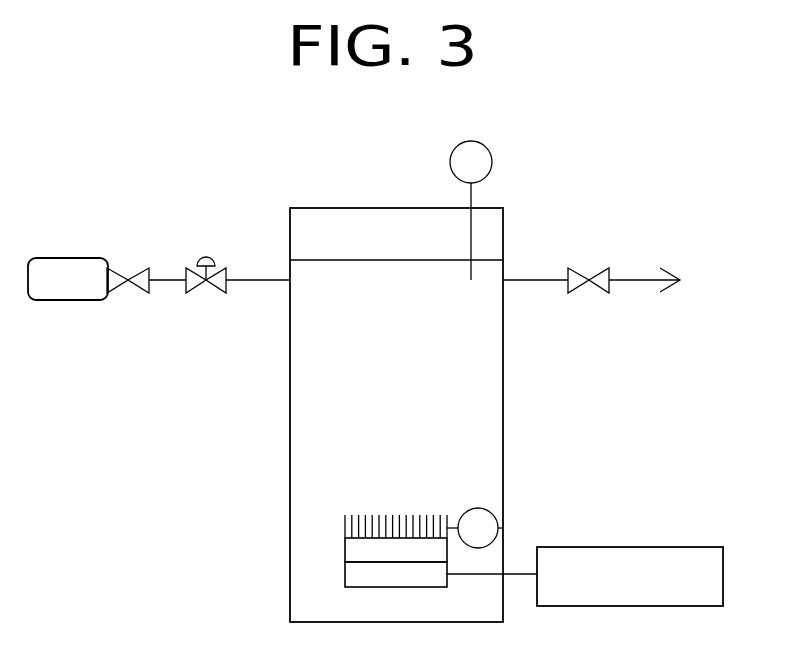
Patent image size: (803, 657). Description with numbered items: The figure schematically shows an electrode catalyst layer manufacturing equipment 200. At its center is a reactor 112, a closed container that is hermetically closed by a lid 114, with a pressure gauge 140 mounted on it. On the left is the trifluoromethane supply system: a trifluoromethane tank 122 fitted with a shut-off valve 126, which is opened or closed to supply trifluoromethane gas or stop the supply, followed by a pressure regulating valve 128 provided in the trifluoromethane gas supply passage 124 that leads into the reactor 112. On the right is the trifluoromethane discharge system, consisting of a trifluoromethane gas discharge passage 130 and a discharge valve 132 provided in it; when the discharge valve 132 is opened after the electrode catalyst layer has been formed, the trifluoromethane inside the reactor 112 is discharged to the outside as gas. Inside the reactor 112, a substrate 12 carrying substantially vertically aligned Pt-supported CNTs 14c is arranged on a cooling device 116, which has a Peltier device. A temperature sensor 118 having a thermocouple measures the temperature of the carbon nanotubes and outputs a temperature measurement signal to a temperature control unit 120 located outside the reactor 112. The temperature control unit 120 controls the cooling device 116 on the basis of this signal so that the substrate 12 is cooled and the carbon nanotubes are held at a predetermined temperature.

The electrode catalyst layer manufacturing equipment 200 is at (641, 150).
The reactor 112 is at (503, 383).
The lid 114 is at (490, 218).
The pressure gauge 140 is at (492, 161).
The trifluoromethane tank 122 is at (68, 302).
The shut-off valve 126 is at (128, 281).
The pressure regulating valve 128 is at (206, 293).
The trifluoromethane gas supply passage 124 is at (257, 280).
The trifluoromethane gas discharge passage 130 is at (542, 282).
The discharge valve 132 is at (589, 285).
The Pt-supported CNTs 14c is at (345, 518).
The substrate 12 is at (345, 548).
The cooling device 116 is at (345, 573).
The temperature sensor 118 is at (480, 508).
The temperature control unit 120 is at (677, 547).